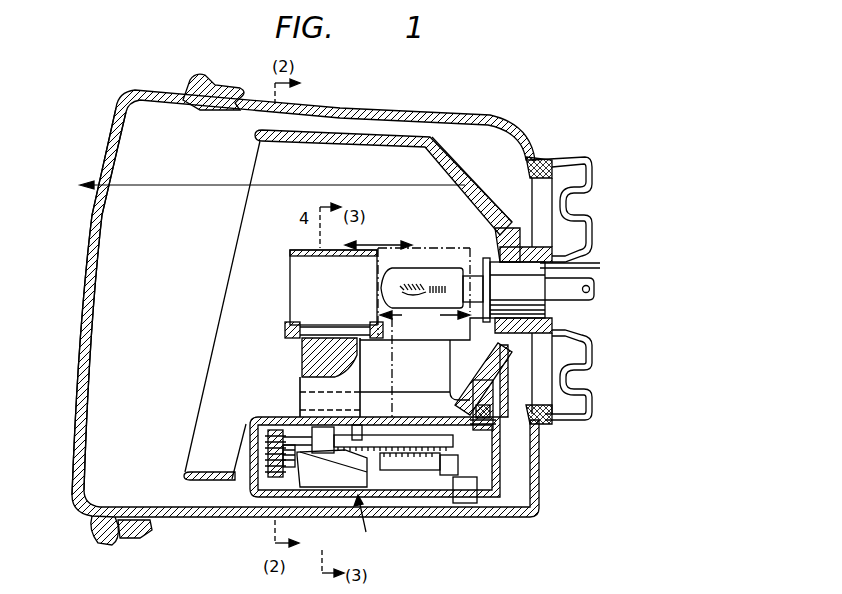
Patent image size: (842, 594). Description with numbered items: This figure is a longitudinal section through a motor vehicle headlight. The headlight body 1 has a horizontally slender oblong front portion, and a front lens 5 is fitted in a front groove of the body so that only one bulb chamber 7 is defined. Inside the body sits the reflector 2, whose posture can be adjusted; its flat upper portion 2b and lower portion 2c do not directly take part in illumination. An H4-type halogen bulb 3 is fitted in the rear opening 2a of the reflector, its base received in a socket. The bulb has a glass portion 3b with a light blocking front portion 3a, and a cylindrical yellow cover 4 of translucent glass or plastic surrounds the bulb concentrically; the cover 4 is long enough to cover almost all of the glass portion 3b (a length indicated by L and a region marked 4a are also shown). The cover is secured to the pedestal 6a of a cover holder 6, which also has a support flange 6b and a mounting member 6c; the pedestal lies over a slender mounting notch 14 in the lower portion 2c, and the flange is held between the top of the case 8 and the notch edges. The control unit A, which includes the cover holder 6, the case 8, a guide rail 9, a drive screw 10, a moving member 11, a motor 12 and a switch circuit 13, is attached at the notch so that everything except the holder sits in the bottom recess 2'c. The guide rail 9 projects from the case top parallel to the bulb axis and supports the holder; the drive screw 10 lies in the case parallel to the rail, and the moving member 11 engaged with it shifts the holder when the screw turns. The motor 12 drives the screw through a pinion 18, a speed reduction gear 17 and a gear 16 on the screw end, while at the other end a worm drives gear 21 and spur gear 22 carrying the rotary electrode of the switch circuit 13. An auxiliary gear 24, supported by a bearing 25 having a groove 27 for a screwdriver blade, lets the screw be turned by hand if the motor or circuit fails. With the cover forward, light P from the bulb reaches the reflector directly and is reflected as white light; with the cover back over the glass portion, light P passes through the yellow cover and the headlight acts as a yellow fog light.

The headlight body 1 is at (410, 112).
The reflector 2 is at (220, 306).
The rear opening 2a is at (517, 248).
The upper portion 2b is at (330, 145).
The lower portion 2c is at (218, 472).
The bottom recess 2'c is at (223, 463).
The bulb 3 is at (588, 308).
The light blocking front portion 3a is at (384, 273).
The glass portion 3b is at (453, 275).
The yellow cover 4 is at (378, 245).
The shield 4a is at (290, 275).
The front lens 5 is at (82, 302).
The cover holder 6 is at (290, 372).
The pedestal 6a is at (345, 327).
The support flange 6b is at (354, 410).
The mounting member 6c is at (292, 330).
The bulb chamber 7 is at (100, 355).
The case 8 is at (372, 415).
The guide rail 9 is at (396, 418).
The drive screw 10 is at (413, 433).
The moving member 11 is at (324, 447).
The motor 12 is at (308, 482).
The switch circuit 13 is at (430, 497).
The slender mounting notch 14 is at (441, 413).
The gear 16 is at (280, 428).
The speed reduction gear 17 is at (272, 478).
The pinion 18 is at (265, 445).
The gear 21 is at (480, 462).
The spur gear 22 is at (385, 472).
The auxiliary gear 24 is at (488, 395).
The bearing 25 is at (490, 411).
The groove 27 is at (492, 412).
The light P is at (176, 185).
The control unit A is at (362, 522).
The filament length L is at (425, 322).